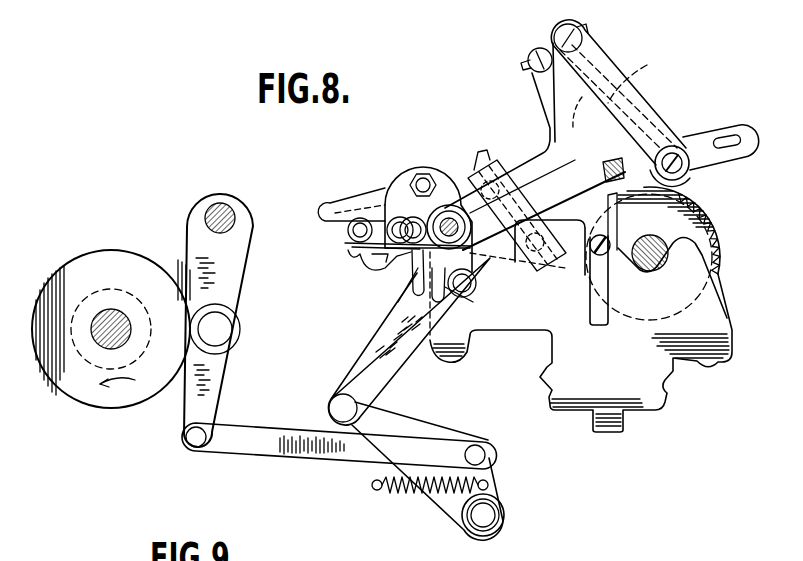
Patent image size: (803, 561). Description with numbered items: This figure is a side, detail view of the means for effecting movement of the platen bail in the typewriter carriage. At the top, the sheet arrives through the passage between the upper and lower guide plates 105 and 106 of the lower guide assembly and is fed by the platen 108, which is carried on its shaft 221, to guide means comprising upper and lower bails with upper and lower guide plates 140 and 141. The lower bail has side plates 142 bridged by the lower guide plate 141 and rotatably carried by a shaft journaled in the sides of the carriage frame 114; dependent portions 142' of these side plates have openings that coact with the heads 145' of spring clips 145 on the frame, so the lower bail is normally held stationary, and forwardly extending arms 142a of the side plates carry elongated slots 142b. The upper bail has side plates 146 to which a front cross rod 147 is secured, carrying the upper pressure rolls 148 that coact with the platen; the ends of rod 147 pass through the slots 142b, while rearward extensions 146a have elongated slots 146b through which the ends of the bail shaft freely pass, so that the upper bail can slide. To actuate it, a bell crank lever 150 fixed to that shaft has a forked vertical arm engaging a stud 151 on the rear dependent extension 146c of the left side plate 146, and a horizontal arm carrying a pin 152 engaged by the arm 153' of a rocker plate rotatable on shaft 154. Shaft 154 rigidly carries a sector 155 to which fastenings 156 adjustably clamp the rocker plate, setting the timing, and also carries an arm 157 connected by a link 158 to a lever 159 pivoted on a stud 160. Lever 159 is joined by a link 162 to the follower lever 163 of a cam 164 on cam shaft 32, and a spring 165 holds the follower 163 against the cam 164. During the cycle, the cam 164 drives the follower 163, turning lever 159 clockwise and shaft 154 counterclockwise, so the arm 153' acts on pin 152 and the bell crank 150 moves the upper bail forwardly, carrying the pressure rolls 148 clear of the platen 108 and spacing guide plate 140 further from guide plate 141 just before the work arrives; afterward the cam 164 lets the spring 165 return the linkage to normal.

The cam shaft 32 is at (97, 338).
The upper guide plate 105 is at (494, 145).
The lower guide plate 106 is at (473, 162).
The platen 108 is at (710, 221).
The carriage frame 114 is at (713, 328).
The upper guide plate 140 is at (644, 77).
The lower guide plate 141 is at (618, 98).
The side plates 142 is at (535, 146).
The dependent portions 142' is at (660, 220).
The forwardly extending arms 142a is at (733, 130).
The elongated slots 142b is at (733, 152).
The spring clips 145 is at (571, 280).
The heads 145' is at (553, 258).
The side plates 146 is at (598, 58).
The rearward extensions 146a is at (357, 245).
The elongated slots 146b is at (375, 268).
The dependent extension 146c is at (410, 268).
The front cross rod 147 is at (669, 145).
The upper pressure rolls 148 is at (682, 150).
The bell crank lever 150 is at (363, 260).
The stud 151 is at (398, 302).
The pin 152 is at (348, 229).
The arm 153' is at (436, 214).
The shaft 154 is at (449, 218).
The sector 155 is at (400, 188).
The fastenings 156 is at (418, 178).
The arm 157 is at (474, 258).
The link 158 is at (384, 377).
The lever 159 is at (421, 427).
The stud 160 is at (468, 527).
The link 162 is at (266, 447).
The follower lever 163 is at (215, 375).
The cam 164 is at (125, 397).
The spring 165 is at (400, 490).
The shaft 221 is at (650, 270).